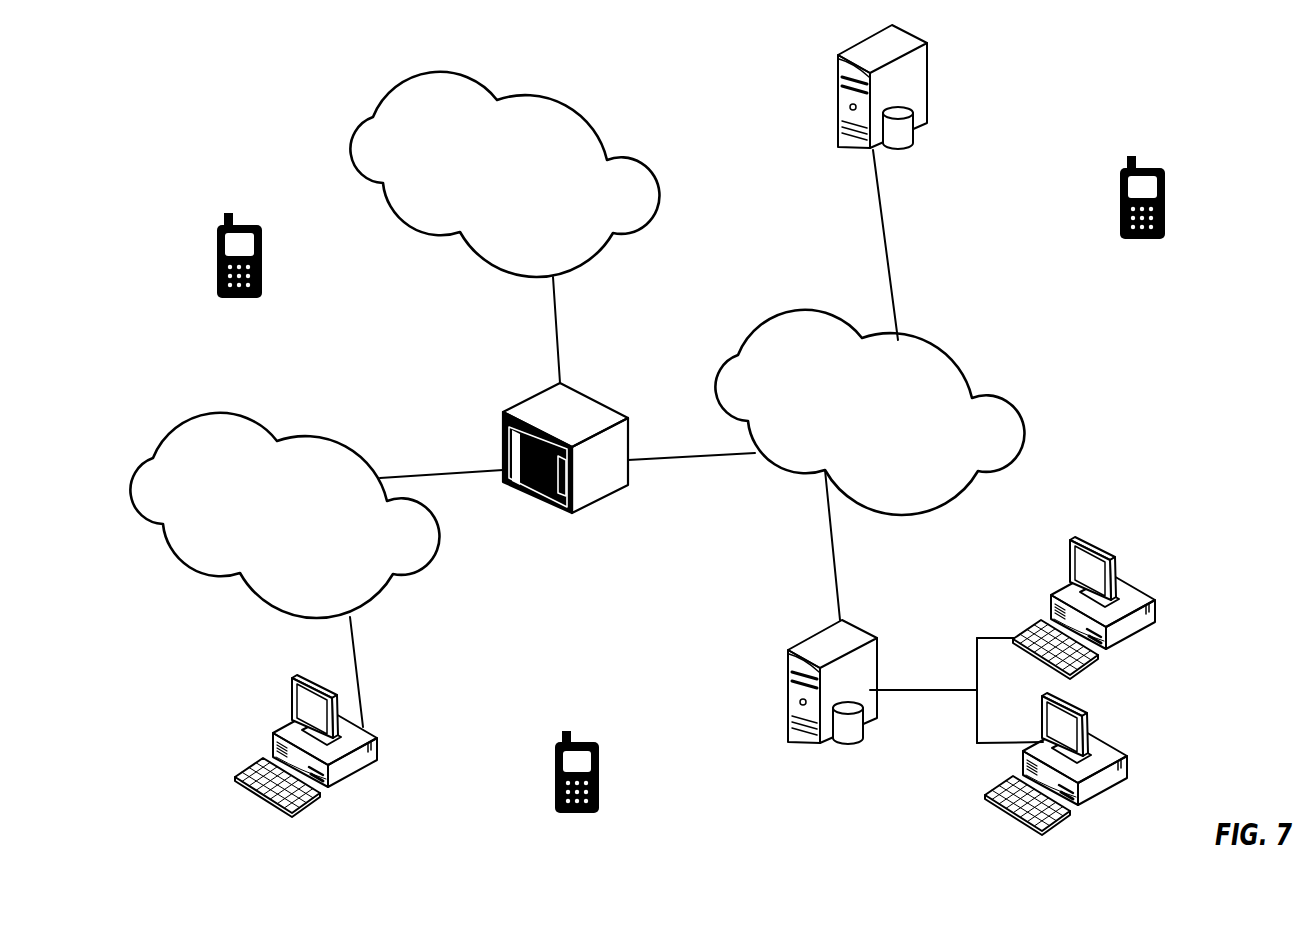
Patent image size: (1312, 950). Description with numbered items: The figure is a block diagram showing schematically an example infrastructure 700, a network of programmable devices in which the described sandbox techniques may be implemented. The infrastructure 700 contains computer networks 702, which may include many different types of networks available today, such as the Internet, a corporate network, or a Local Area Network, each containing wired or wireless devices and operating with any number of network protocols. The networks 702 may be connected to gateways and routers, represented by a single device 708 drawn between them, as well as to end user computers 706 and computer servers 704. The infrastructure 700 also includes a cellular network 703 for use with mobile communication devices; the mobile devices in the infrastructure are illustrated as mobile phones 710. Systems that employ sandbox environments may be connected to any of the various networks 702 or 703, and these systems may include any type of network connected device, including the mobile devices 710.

The infrastructure 700 is at (1017, 122).
The computer networks 702 is at (263, 427).
The cellular network 703 is at (549, 103).
The computer servers 704 is at (842, 78).
The end user computers 706 is at (377, 735).
The gateways and routers 708 is at (588, 393).
The mobile phones 710 is at (252, 225).